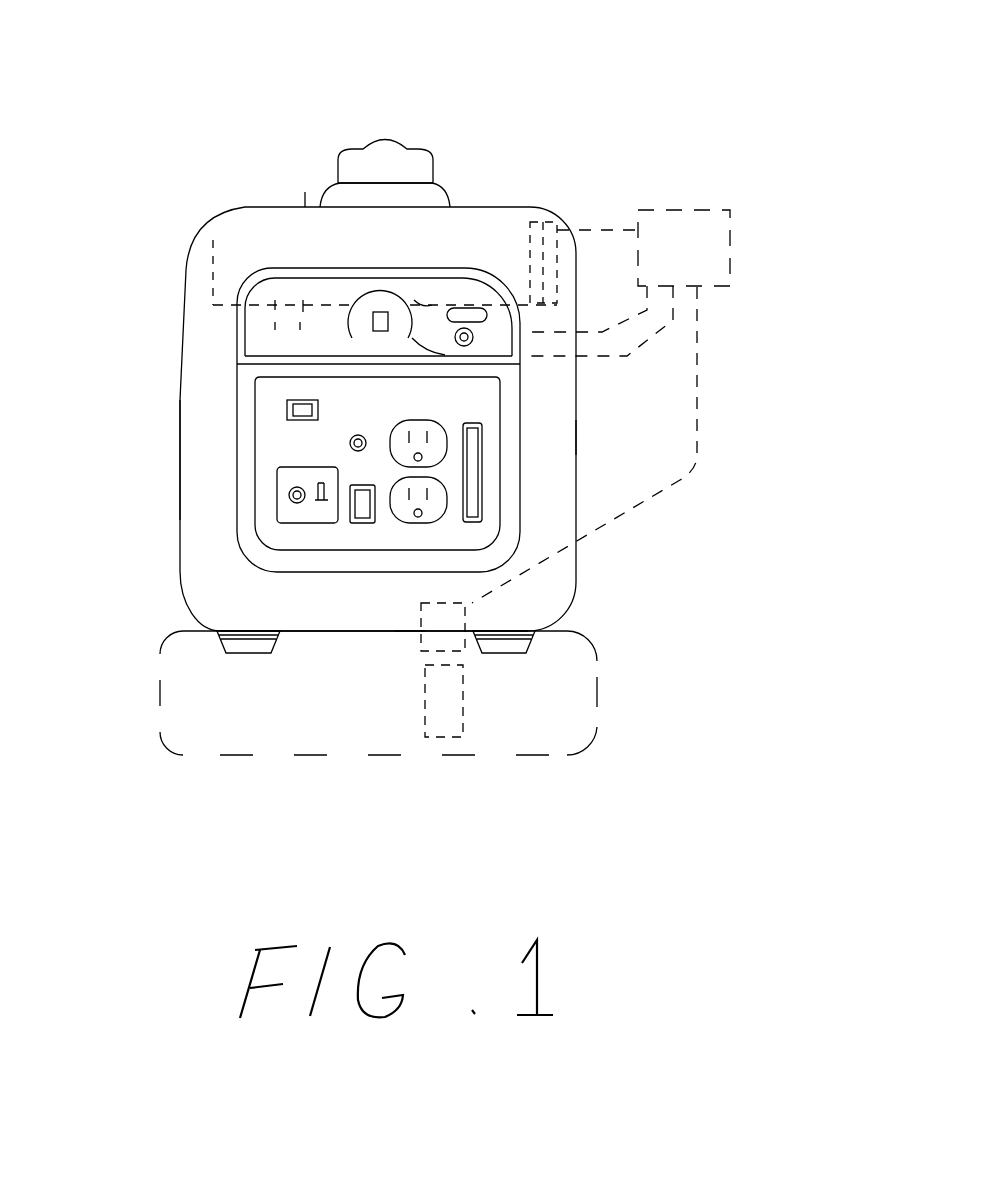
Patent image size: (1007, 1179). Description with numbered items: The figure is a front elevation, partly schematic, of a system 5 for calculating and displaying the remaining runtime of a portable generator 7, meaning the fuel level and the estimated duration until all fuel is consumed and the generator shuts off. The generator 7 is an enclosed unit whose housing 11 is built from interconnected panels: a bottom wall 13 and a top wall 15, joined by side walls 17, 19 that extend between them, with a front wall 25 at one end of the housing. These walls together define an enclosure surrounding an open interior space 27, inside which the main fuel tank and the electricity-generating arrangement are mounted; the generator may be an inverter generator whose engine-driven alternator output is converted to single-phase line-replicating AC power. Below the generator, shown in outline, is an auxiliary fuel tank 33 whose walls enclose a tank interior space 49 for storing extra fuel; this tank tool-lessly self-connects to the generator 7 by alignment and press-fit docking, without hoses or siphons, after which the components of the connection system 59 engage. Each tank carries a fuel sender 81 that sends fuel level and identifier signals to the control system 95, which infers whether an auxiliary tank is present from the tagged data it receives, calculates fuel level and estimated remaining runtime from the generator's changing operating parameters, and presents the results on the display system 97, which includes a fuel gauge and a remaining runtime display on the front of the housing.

The system 5 is at (648, 145).
The portable generator 7 is at (443, 88).
The housing 11 is at (255, 180).
The bottom wall 13 is at (315, 628).
The top wall 15 is at (288, 170).
The side wall 17 is at (178, 452).
The side wall 19 is at (463, 300).
The front wall 25 is at (222, 398).
The open interior space 27 is at (205, 527).
The auxiliary fuel tank 33 is at (145, 725).
The tank interior space 49 is at (365, 298).
The connection system 59 is at (398, 648).
The fuel sender 81 is at (520, 238).
The control system 95 is at (713, 192).
The display system 97 is at (419, 290).